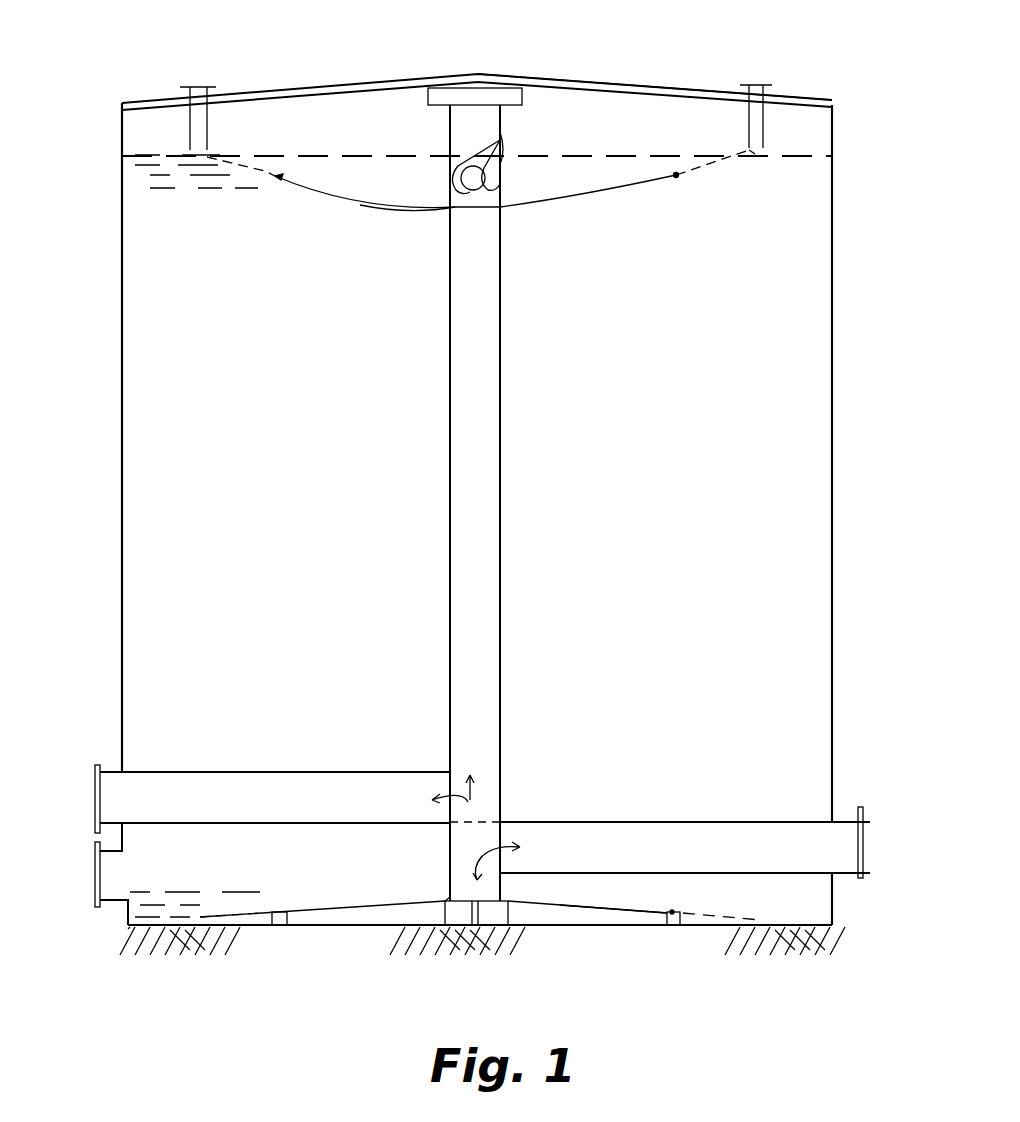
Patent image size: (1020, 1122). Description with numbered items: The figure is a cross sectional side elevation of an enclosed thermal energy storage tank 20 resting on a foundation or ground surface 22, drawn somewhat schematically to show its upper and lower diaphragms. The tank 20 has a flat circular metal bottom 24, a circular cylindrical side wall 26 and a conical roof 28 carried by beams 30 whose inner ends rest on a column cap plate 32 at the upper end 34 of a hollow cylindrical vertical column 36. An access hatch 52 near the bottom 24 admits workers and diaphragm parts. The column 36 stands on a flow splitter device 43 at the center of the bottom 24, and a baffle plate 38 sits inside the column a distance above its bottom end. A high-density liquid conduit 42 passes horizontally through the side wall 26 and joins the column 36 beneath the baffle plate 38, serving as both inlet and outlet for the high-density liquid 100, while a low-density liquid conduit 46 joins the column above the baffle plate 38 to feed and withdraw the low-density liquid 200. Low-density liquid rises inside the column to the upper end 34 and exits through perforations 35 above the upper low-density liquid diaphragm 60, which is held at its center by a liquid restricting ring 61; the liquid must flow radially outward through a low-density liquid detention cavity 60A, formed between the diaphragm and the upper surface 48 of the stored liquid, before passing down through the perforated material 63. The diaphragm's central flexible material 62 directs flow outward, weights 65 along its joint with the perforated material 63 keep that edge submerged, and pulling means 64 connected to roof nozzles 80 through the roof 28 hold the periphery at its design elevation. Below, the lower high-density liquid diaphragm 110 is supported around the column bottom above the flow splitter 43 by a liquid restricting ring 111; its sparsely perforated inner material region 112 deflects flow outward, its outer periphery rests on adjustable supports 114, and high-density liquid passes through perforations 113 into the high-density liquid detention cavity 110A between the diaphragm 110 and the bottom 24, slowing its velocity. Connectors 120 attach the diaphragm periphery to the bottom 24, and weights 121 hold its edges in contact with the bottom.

The storage tank 20 is at (471, 498).
The ground surface 22 is at (845, 928).
The tank bottom 24 is at (300, 928).
The side wall 26 is at (832, 651).
The roof 28 is at (477, 93).
The beams 30 is at (336, 102).
The column cap plate 32 is at (428, 100).
The upper end of column 34 is at (507, 189).
The perforations 35 is at (500, 142).
The vertical column 36 is at (500, 487).
The baffle plate 38 is at (474, 814).
The high-density liquid conduit 42 is at (843, 820).
The flow splitter device 43 is at (506, 916).
The low-density liquid conduit 46 is at (106, 764).
The upper surface of stored liquid 48 is at (646, 118).
The access hatch 52 is at (95, 886).
The upper low-density liquid diaphragm 60 is at (346, 194).
The low-density liquid detention cavity 60A is at (415, 191).
The liquid restricting ring 61 is at (502, 210).
The flexible material 62 is at (588, 196).
The perforated material 63 is at (688, 173).
The pulling means 64 is at (752, 154).
The weights 65 is at (678, 178).
The roof nozzles 80 is at (186, 86).
The high-density liquid 100 is at (475, 872).
The lower high-density liquid diaphragm 110 is at (345, 902).
The high-density liquid detention cavity 110A is at (569, 914).
The liquid restricting ring 111 is at (452, 899).
The inner material region 112 is at (590, 897).
The perforations 113 is at (714, 908).
The supports 114 is at (672, 911).
The connectors 120 is at (201, 914).
The weights 121 is at (756, 918).
The low-density liquid 200 is at (165, 177).